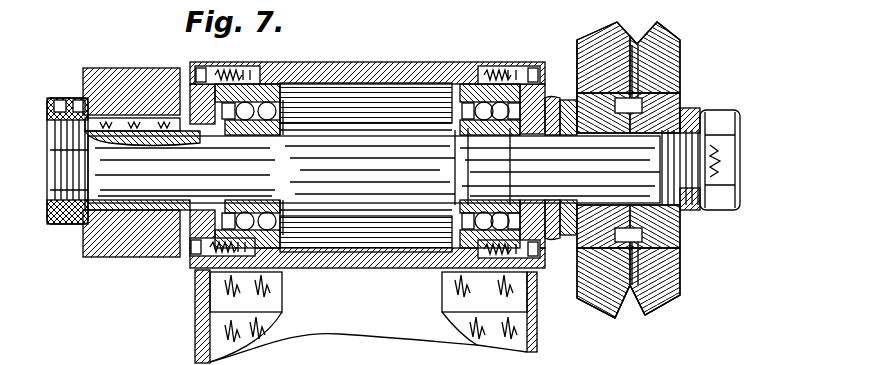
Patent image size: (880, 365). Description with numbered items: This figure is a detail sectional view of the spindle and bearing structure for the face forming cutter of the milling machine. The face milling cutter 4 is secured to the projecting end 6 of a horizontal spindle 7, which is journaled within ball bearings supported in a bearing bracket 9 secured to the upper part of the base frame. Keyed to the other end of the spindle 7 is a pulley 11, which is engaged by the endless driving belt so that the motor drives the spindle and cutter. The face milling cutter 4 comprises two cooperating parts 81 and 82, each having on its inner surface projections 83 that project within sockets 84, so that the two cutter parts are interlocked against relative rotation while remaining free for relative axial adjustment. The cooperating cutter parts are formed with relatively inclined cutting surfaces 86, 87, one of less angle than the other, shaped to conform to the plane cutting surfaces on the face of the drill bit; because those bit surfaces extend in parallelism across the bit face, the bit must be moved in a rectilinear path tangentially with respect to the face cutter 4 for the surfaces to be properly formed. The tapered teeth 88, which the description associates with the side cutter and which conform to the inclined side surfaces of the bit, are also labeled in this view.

The face milling cutter 4 is at (680, 268).
The projecting end 6 is at (684, 112).
The horizontal spindle 7 is at (395, 203).
The bearing bracket 9 is at (358, 62).
The pulley 11 is at (97, 68).
The cooperating cutter part 81 is at (577, 90).
The cooperating cutter part 82 is at (655, 100).
The projection 83 is at (620, 100).
The socket 84 is at (640, 45).
The inclined cutting surface 86 is at (680, 302).
The inclined cutting surface 87 is at (625, 315).
The tapered teeth 88 is at (678, 58).